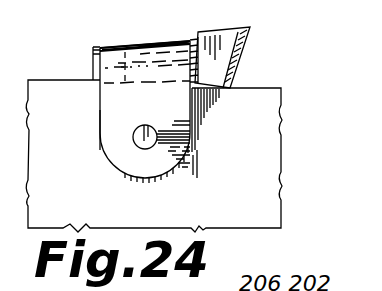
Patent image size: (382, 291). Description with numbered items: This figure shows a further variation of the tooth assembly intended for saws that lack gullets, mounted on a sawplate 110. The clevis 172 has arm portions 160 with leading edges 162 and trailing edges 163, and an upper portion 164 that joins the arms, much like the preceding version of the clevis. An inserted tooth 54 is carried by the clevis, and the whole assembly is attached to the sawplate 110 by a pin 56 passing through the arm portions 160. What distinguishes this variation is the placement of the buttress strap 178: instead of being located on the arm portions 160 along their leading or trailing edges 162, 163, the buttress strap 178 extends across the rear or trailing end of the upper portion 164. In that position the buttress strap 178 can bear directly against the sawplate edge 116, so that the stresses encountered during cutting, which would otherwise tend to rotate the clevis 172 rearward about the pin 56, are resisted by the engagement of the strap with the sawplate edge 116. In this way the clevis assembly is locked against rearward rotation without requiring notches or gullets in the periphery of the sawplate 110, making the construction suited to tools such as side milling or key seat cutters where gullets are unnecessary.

The inserted tooth 54 is at (223, 32).
The pin 56 is at (140, 141).
The sawplate 110 is at (222, 199).
The sawplate edge 116 is at (52, 67).
The arm portions 160 is at (190, 124).
The leading edges 162 is at (193, 92).
The trailing edges 163 is at (100, 143).
The upper portion 164 is at (139, 43).
The clevis 172 is at (90, 120).
The buttress strap 178 is at (96, 49).